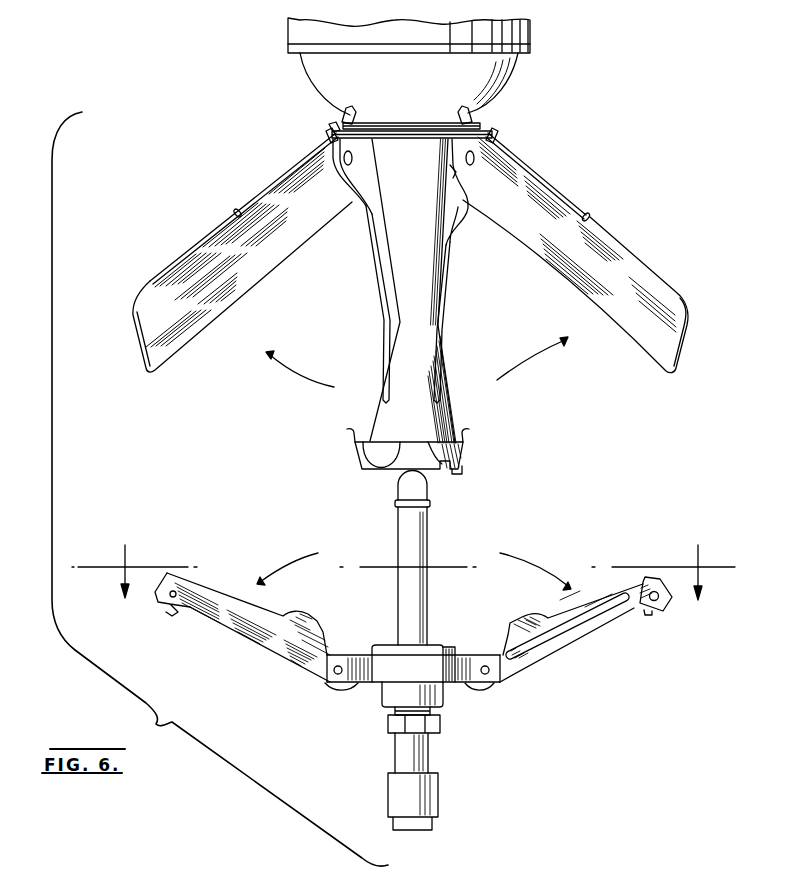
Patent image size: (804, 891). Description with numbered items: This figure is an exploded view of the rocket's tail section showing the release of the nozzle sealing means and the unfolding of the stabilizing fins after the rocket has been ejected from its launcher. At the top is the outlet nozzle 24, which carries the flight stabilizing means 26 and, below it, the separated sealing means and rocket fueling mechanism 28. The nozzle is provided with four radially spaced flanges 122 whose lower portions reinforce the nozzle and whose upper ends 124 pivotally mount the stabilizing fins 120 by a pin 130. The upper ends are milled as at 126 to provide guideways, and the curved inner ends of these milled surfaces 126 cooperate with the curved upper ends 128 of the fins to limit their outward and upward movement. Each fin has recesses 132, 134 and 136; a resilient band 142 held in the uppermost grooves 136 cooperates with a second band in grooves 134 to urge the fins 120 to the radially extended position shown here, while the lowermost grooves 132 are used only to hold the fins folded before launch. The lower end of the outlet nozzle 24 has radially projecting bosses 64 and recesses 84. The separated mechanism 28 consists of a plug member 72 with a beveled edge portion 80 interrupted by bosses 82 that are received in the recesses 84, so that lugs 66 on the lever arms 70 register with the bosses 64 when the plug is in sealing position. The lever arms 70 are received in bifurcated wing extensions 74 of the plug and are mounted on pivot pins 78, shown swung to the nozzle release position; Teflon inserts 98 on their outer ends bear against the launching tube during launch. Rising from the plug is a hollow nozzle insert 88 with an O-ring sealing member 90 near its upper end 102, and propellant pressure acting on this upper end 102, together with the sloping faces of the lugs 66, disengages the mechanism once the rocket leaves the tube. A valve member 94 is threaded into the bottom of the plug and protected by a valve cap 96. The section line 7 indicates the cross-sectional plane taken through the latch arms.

The section line 7- 7 is at (403, 572).
The outlet nozzle 24 is at (420, 428).
The flight stabilizing means 26 is at (264, 172).
The sealing means and rocket fueling mechanism 28 is at (374, 704).
The bosses 64 is at (357, 442).
The lugs 66 is at (316, 619).
The lever arms 70 is at (257, 637).
The plug member 72 is at (443, 702).
The wing extensions 74 is at (358, 687).
The pivot pins 78 is at (333, 673).
The beveled edge portion 80 is at (377, 646).
The bosses 82 is at (449, 650).
The recesses 84 is at (462, 472).
The nozzle insert 88 is at (429, 538).
The O-ring sealing member 90 is at (396, 503).
The valve member 94 is at (429, 752).
The valve cap 96 is at (394, 804).
The Teflon inserts 98 is at (177, 612).
The upper end 102 is at (430, 482).
The stabilizing fins 120 is at (258, 206).
The flanges 122 is at (387, 287).
The upper ends 124 is at (380, 126).
The milled surfaces 126 is at (368, 217).
The curved upper ends 128 is at (455, 173).
The pin 130 is at (466, 158).
The recesses 132 is at (236, 214).
The recesses 134 is at (336, 132).
The recesses 136 is at (348, 116).
The resilient band 142 is at (420, 124).